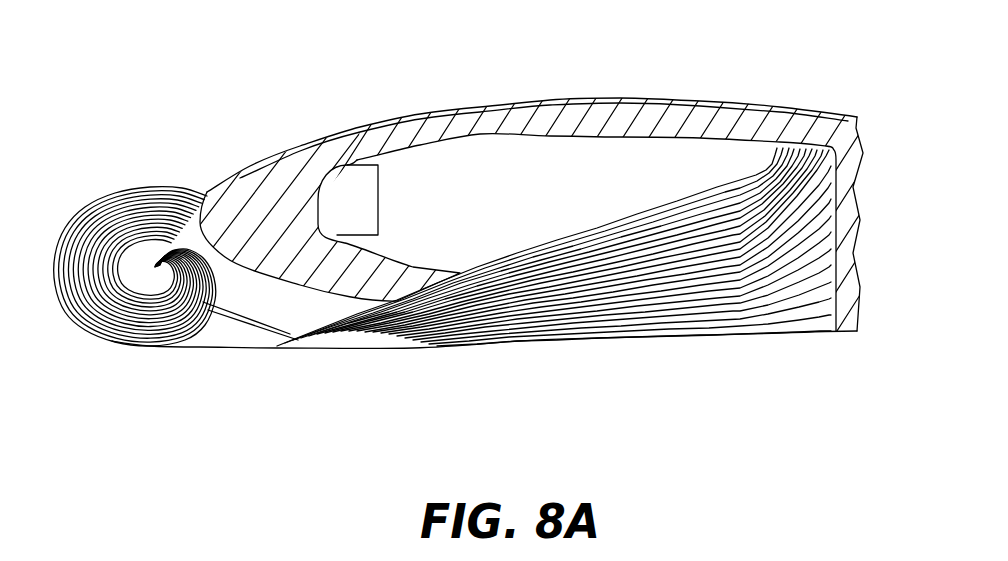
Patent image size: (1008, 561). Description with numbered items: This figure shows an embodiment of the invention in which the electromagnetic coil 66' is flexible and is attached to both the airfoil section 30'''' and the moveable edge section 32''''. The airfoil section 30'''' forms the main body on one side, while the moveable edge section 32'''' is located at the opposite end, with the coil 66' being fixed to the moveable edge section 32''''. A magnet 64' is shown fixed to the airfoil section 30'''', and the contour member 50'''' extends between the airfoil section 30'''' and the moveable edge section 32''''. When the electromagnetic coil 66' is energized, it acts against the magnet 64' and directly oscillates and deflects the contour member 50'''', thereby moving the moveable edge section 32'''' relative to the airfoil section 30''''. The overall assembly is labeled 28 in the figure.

The inflatable curtain assembly 28 is at (343, 40).
The airfoil section 30'''' is at (607, 189).
The moveable edge section 32'''' is at (135, 233).
The contour member 50'''' is at (342, 200).
The inflator / fill tube 64' is at (409, 145).
The electromagnetic coil 66' is at (554, 277).